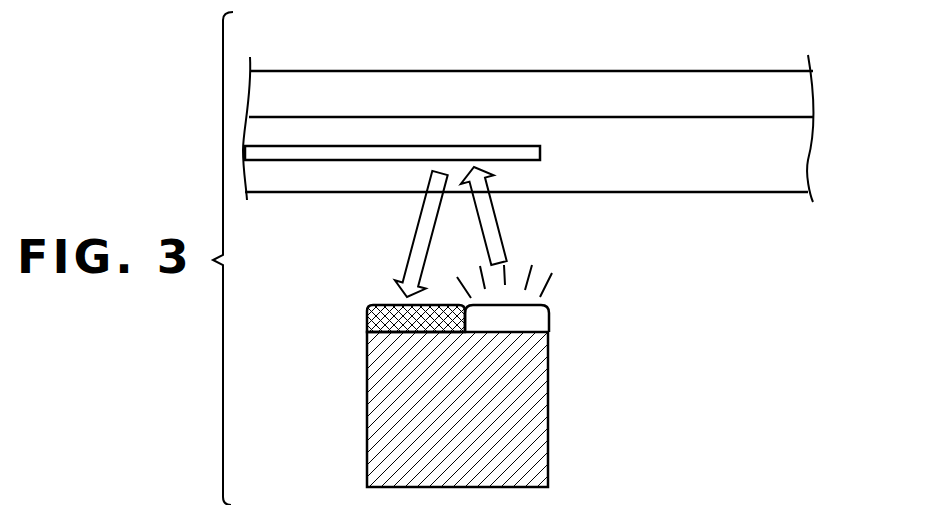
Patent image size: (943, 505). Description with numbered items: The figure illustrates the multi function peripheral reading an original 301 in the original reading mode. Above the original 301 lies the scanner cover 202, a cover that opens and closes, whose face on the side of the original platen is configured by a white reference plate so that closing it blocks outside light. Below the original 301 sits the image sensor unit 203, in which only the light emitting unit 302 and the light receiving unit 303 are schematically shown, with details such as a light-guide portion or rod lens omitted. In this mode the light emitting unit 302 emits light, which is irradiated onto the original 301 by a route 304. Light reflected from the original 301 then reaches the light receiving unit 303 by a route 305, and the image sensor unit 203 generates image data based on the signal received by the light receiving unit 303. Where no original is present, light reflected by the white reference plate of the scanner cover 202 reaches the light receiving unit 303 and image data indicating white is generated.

The scanner cover 202 is at (628, 71).
The image sensor unit 203 is at (549, 460).
The original 301 is at (410, 146).
The light emitting unit 302 is at (549, 318).
The light receiving unit 303 is at (367, 322).
The route 304 is at (498, 218).
The route 305 is at (415, 228).